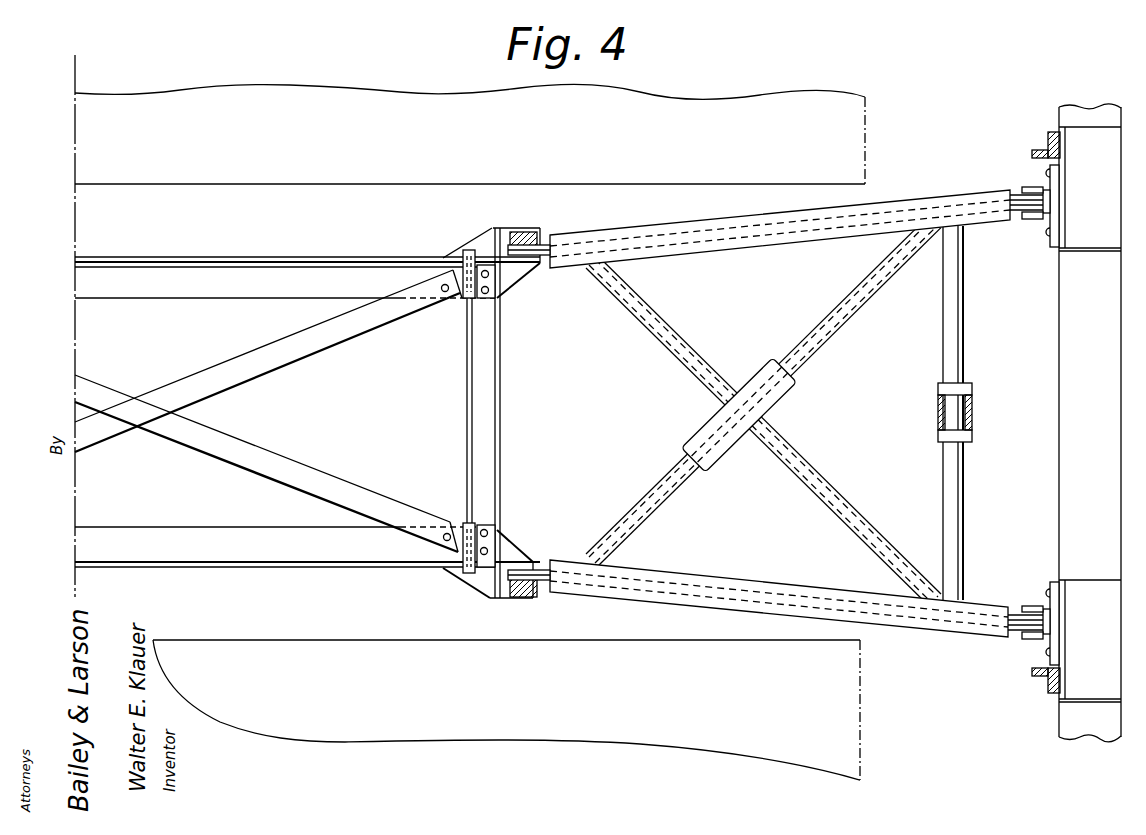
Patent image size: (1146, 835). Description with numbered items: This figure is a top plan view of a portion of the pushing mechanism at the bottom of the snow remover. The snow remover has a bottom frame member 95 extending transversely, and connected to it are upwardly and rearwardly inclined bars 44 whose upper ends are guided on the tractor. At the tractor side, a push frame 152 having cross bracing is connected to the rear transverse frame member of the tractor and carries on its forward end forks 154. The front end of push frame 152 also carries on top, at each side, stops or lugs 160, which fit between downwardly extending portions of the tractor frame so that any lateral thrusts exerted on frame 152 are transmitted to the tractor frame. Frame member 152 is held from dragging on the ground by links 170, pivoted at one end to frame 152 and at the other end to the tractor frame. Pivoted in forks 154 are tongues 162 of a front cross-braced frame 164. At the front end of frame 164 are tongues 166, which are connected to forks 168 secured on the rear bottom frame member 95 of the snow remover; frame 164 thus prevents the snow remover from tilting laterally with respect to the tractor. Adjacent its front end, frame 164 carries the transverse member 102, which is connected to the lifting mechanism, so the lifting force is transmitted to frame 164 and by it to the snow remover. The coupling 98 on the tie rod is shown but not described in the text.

The inclined bars 44 is at (1047, 153).
The bottom frame member 95 is at (1058, 483).
The turnbuckle 98 is at (972, 413).
The transverse member 102 is at (955, 340).
The push frame 152 is at (240, 287).
The forks 154 is at (495, 228).
The stops or lugs 160 is at (497, 298).
The tongues 162 is at (553, 242).
The front cross-braced frame 164 is at (737, 224).
The tongues 166 is at (1021, 192).
The forks 168 is at (1040, 222).
The links 170 is at (523, 231).